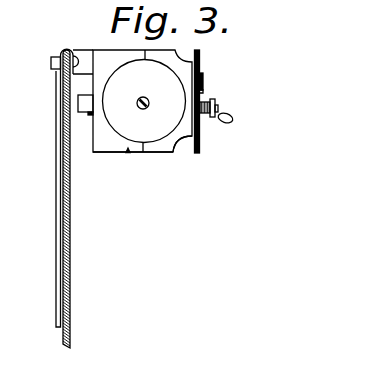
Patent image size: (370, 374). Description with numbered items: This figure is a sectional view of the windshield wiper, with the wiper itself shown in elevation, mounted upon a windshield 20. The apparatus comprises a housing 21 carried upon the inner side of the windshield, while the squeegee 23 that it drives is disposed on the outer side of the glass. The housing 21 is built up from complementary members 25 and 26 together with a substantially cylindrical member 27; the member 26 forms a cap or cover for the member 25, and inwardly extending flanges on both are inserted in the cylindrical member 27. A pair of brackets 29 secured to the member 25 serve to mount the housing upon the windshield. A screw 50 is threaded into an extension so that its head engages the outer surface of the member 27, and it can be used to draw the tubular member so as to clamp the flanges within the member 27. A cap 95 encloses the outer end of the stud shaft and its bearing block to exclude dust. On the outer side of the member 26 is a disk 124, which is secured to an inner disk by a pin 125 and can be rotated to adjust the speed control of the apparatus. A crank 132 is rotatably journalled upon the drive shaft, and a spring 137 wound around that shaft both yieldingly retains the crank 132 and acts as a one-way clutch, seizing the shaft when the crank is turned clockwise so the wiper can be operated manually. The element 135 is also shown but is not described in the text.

The windshield 20 is at (67, 50).
The bracket 29 is at (85, 53).
The cap 95 is at (40, 199).
The squeegee 23 is at (60, 152).
The screw 50 is at (143, 112).
The member 25 is at (105, 153).
The housing 21 is at (128, 153).
The cylindrical member 27 is at (155, 128).
The member 26 is at (176, 147).
The disk 124 is at (199, 64).
The pin 125 is at (202, 73).
The spring 137 is at (202, 91).
The threaded shaft 135 is at (212, 105).
The crank 132 is at (219, 115).